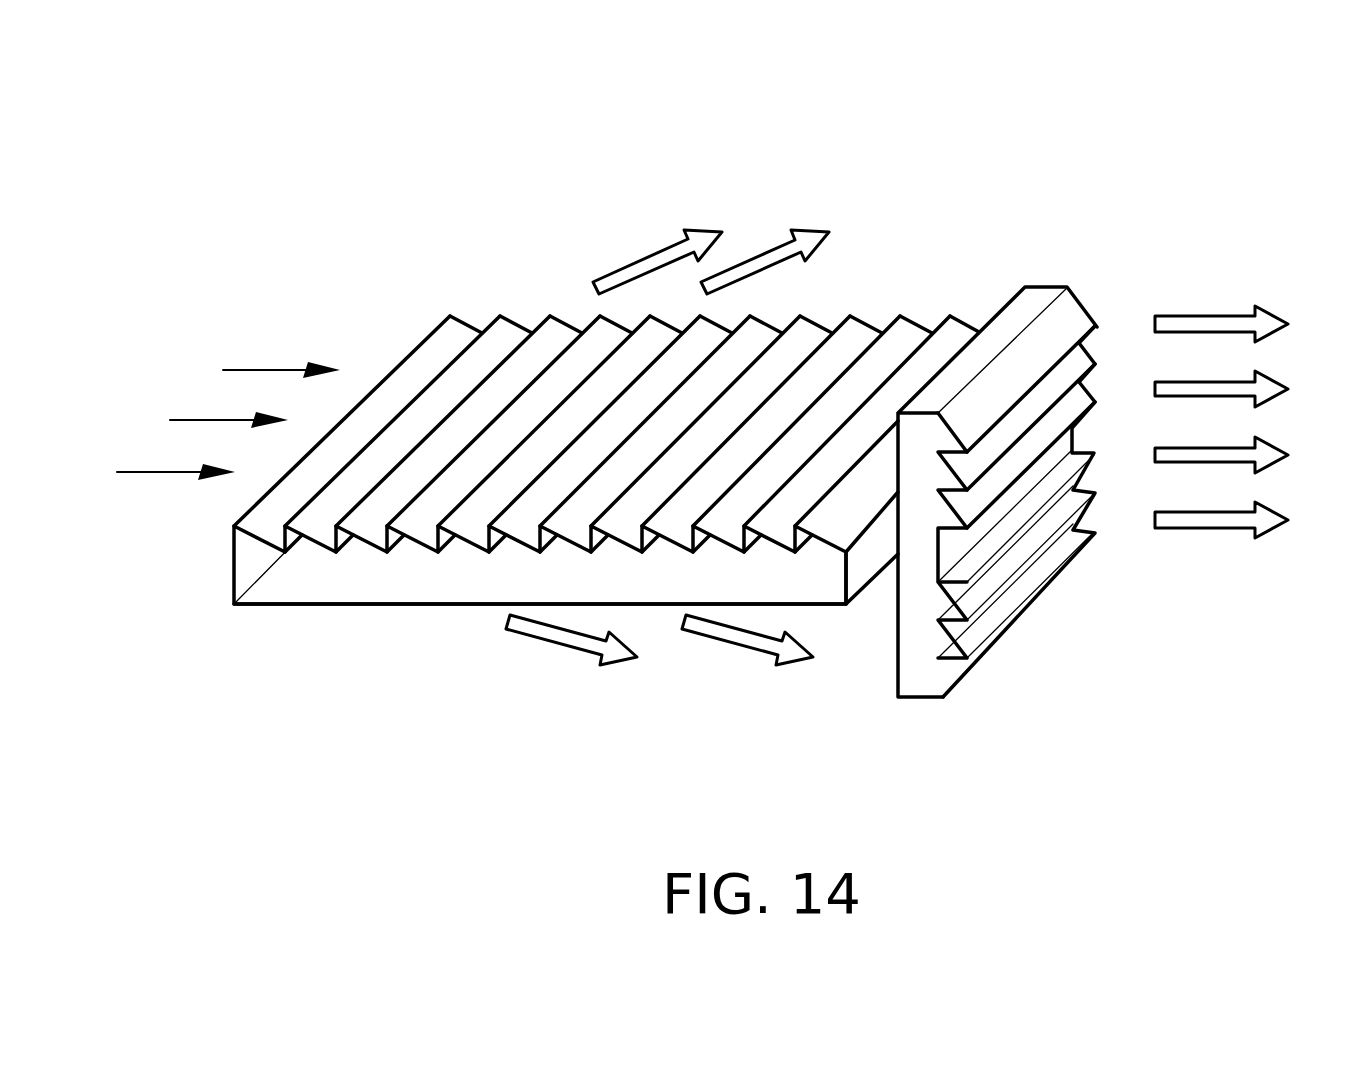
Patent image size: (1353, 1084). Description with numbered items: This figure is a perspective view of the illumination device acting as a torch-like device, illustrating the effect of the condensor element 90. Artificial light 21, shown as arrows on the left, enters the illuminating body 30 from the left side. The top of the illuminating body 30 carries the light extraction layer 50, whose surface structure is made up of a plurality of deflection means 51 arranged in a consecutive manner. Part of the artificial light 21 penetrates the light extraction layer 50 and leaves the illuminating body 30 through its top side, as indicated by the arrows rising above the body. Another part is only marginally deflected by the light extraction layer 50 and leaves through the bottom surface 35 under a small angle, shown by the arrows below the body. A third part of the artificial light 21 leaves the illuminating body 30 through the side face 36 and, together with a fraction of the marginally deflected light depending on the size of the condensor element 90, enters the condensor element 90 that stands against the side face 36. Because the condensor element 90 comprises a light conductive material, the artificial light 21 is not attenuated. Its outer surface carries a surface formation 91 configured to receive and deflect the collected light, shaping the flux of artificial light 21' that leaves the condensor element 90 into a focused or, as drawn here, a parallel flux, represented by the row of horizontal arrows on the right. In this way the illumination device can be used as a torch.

The artificial light 21 is at (473, 477).
The artificial light leaving the condensor element 21' is at (1221, 453).
The illuminating body 30 is at (297, 580).
The bottom surface 35 is at (385, 608).
The side face 36 is at (863, 570).
The light extraction layer 50 is at (458, 333).
The deflection means 51 is at (862, 318).
The condensor element 90 is at (1062, 220).
The surface formation 91 is at (1010, 623).